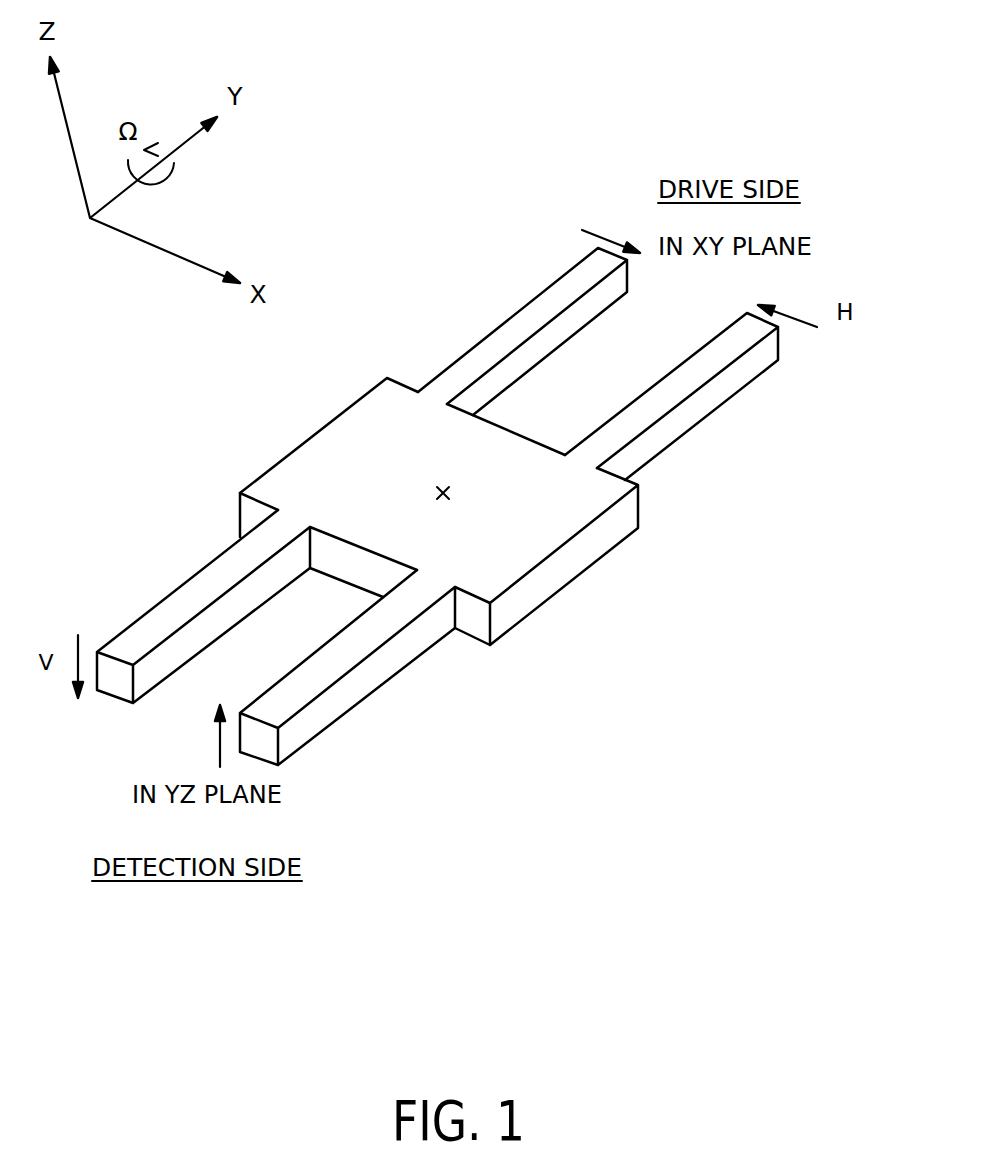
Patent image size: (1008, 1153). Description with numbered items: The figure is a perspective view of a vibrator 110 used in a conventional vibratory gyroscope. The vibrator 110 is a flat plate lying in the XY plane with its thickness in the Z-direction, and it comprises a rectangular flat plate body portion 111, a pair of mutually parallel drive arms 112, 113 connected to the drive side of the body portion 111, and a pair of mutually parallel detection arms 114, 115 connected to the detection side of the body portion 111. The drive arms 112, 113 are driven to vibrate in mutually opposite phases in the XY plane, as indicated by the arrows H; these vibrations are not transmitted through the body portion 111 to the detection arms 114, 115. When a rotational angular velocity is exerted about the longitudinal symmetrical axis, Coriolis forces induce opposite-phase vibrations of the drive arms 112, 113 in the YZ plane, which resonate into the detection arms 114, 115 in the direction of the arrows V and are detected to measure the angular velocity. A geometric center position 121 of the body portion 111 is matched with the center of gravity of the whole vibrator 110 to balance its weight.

The vibrator 110 is at (702, 90).
The body portion 111 is at (555, 582).
The drive arm 112 is at (528, 315).
The drive arm 113 is at (683, 419).
The detection arm 114 is at (148, 670).
The detection arm 115 is at (327, 703).
The geometric center position 121 is at (443, 493).